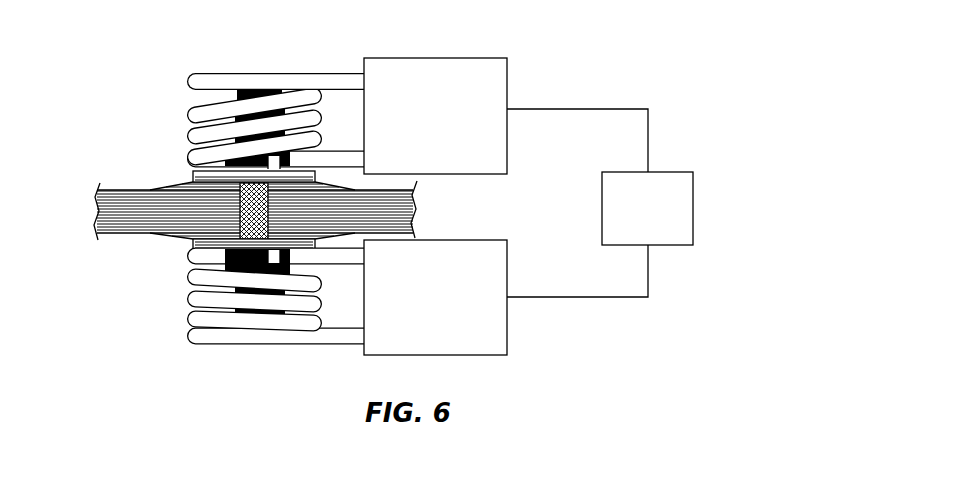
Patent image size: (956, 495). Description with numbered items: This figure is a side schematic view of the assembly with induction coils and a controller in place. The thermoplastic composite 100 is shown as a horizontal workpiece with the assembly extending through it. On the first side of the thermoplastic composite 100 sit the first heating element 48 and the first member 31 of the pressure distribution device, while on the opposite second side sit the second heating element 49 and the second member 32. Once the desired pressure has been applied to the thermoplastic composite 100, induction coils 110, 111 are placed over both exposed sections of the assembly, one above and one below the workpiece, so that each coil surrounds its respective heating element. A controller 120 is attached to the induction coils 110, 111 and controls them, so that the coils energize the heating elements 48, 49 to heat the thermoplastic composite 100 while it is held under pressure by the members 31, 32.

The thermoplastic composite 100 is at (118, 188).
The first member 31 is at (178, 187).
The second member 32 is at (178, 238).
The first heating element 48 is at (185, 173).
The second heating element 49 is at (190, 244).
The induction coil 110 is at (342, 77).
The induction coil 111 is at (351, 336).
The controller 120 is at (631, 216).